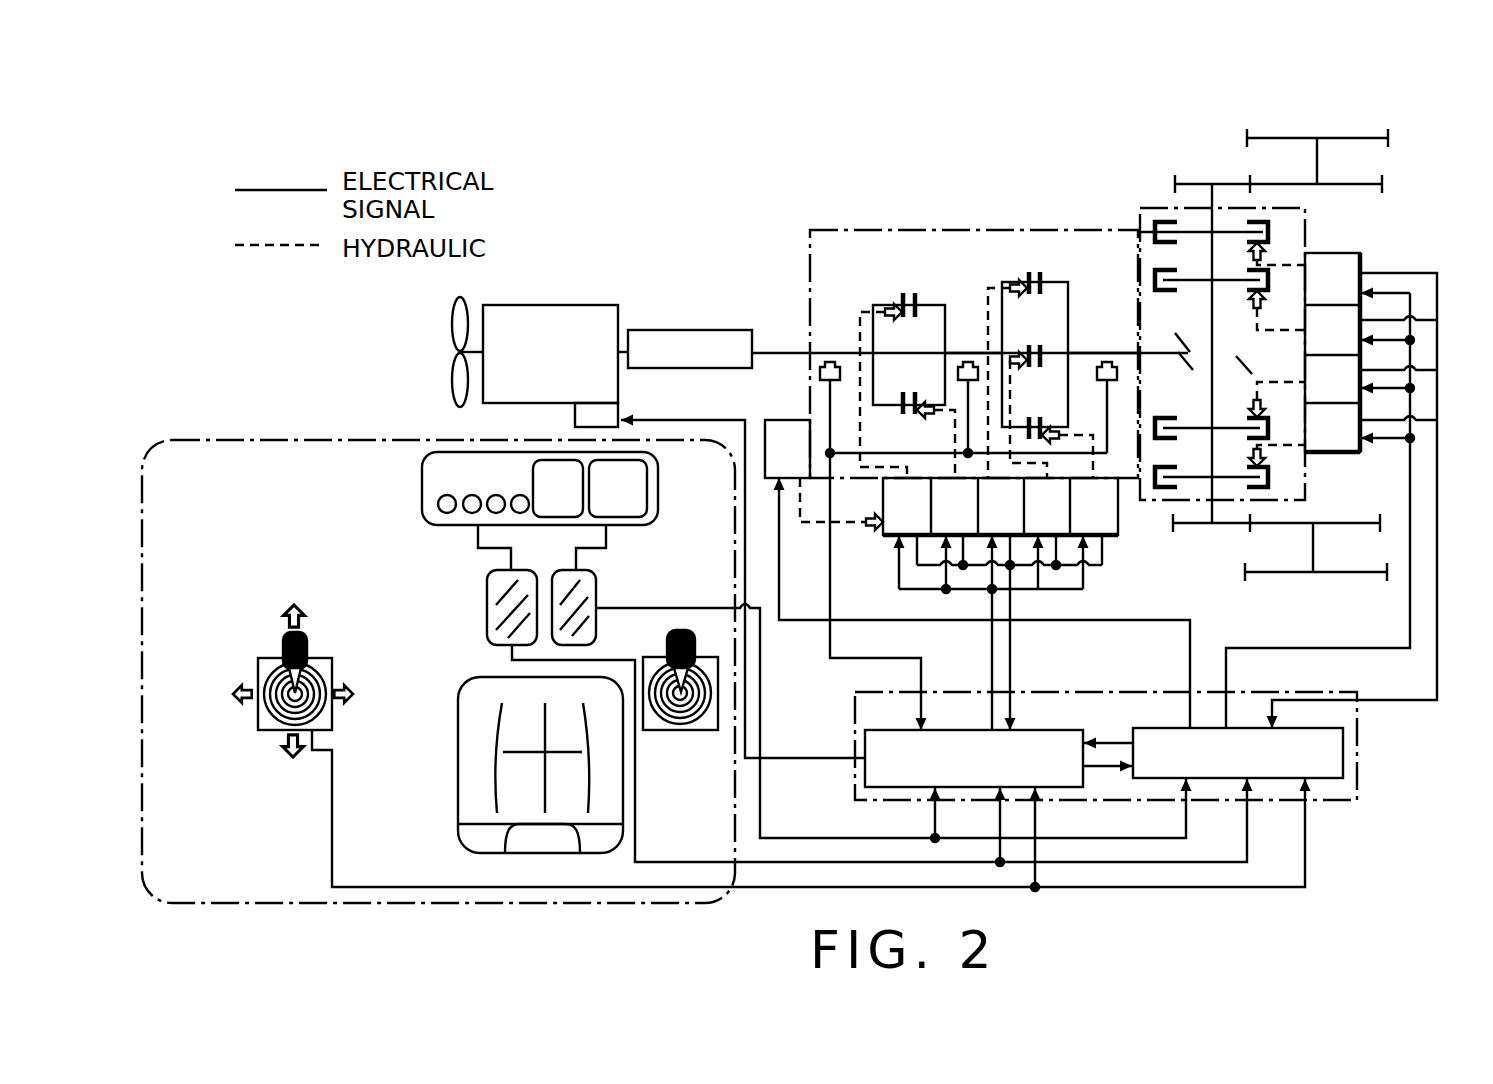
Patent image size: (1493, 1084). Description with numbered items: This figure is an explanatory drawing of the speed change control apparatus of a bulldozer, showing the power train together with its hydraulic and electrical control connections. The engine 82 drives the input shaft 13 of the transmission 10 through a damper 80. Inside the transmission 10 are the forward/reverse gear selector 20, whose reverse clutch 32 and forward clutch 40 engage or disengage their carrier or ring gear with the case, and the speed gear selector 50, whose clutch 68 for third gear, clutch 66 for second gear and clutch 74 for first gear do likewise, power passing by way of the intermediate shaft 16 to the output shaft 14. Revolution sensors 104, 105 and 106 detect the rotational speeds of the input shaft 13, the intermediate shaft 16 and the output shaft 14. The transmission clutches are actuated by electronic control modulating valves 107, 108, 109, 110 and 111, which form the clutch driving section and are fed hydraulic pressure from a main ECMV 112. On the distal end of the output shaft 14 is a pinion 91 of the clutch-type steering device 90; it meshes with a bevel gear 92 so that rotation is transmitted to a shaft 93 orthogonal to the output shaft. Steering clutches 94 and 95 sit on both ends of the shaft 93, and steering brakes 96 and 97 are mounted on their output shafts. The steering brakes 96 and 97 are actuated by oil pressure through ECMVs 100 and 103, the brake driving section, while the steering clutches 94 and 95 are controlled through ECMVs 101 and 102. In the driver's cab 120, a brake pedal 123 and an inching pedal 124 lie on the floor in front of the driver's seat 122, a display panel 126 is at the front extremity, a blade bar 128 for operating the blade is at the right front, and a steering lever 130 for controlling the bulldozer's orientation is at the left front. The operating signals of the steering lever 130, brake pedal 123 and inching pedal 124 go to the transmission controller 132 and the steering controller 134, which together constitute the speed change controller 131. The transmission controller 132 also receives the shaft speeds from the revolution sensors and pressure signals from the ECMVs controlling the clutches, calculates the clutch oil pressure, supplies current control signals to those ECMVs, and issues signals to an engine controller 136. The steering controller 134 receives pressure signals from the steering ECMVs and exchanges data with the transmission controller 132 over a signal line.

The transmission 10 is at (838, 230).
The input shaft 13 is at (757, 350).
The output shaft 14 is at (1080, 350).
The intermediate shaft 16 is at (985, 352).
The forward/reverse gear selector 20 is at (860, 322).
The reverse clutch 32 is at (898, 297).
The forward clutch 40 is at (907, 393).
The speed gear selector 50 is at (1064, 280).
The second gear clutch 66 is at (1018, 343).
The third gear clutch 68 is at (1026, 275).
The clutch for first gear 74 is at (1048, 418).
The damper 80 is at (660, 330).
The engine 82 is at (563, 305).
The clutch-type steering device 90 is at (1153, 208).
The pinion 91 is at (1185, 343).
The bevel gear 92 is at (1243, 372).
The shaft 93 is at (1212, 397).
The steering clutch 94 is at (1270, 286).
The steering clutch 95 is at (1160, 437).
The steering brake 96 is at (1140, 218).
The steering brake 97 is at (1265, 487).
The electronic control modulating valve 100 is at (1348, 268).
The electronic control modulating valve 101 is at (1345, 322).
The electronic control modulating valve 102 is at (1347, 400).
The electronic control modulating valve 103 is at (1340, 445).
The revolution sensor 104 is at (820, 363).
The revolution sensor 105 is at (962, 362).
The revolution sensor 106 is at (1110, 365).
The electronic control modulating valve 107 is at (885, 535).
The electronic control modulating valve 108 is at (962, 522).
The electronic control modulating valve 109 is at (1012, 522).
The electronic control modulating valve 110 is at (1058, 522).
The electronic control modulating valve 111 is at (1112, 508).
The main ECMV 112 is at (772, 420).
The driver's cab 120 is at (368, 440).
The driver's seat 122 is at (612, 803).
The brake pedal 123 is at (597, 573).
The inching pedal 124 is at (487, 585).
The display panel 126 is at (423, 482).
The blade bar 128 is at (680, 632).
The steering lever 130 is at (283, 640).
The speed change controller 131 is at (855, 703).
The transmission controller 132 is at (865, 786).
The steering controller 134 is at (1345, 757).
The engine controller 136 is at (575, 418).